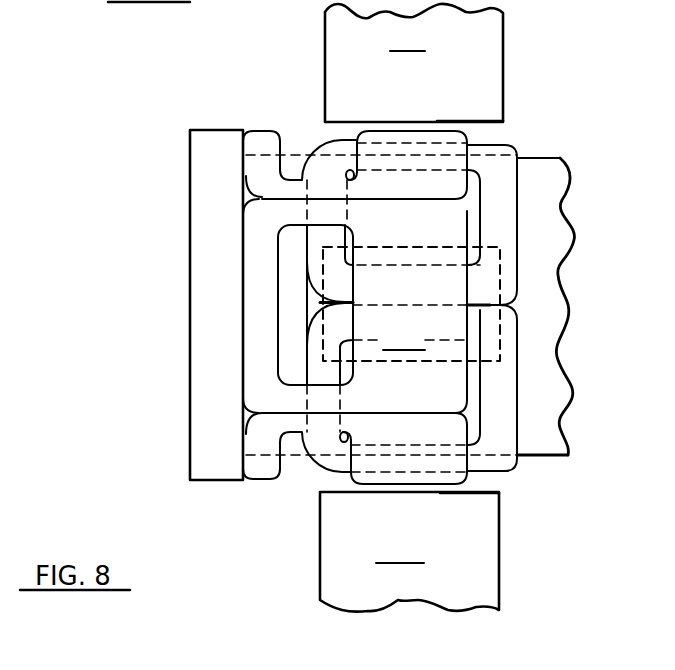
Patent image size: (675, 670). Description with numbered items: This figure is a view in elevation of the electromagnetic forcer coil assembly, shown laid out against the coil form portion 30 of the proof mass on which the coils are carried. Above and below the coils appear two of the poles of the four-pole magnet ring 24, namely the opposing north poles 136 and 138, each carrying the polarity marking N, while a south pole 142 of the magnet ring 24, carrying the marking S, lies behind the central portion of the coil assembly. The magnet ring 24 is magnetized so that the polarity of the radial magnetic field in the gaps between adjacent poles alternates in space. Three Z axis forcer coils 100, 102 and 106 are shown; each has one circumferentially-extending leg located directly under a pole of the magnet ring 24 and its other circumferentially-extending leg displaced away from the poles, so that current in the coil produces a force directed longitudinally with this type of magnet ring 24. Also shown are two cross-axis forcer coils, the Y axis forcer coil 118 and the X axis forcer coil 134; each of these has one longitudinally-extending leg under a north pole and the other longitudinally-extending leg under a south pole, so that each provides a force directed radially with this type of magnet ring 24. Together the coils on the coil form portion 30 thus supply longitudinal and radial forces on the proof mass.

The four-pole magnet ring 24 is at (411, 308).
The coil form portion 30 is at (555, 195).
The Z axis forcer coil 100 is at (240, 390).
The Z axis forcer coil 102 is at (268, 140).
The Z axis forcer coil 106 is at (262, 479).
The Y axis forcer coil 118 is at (517, 253).
The X axis forcer coil 134 is at (517, 410).
The north pole 136 is at (437, 120).
The north pole 138 is at (455, 494).
The south pole 142 is at (493, 306).